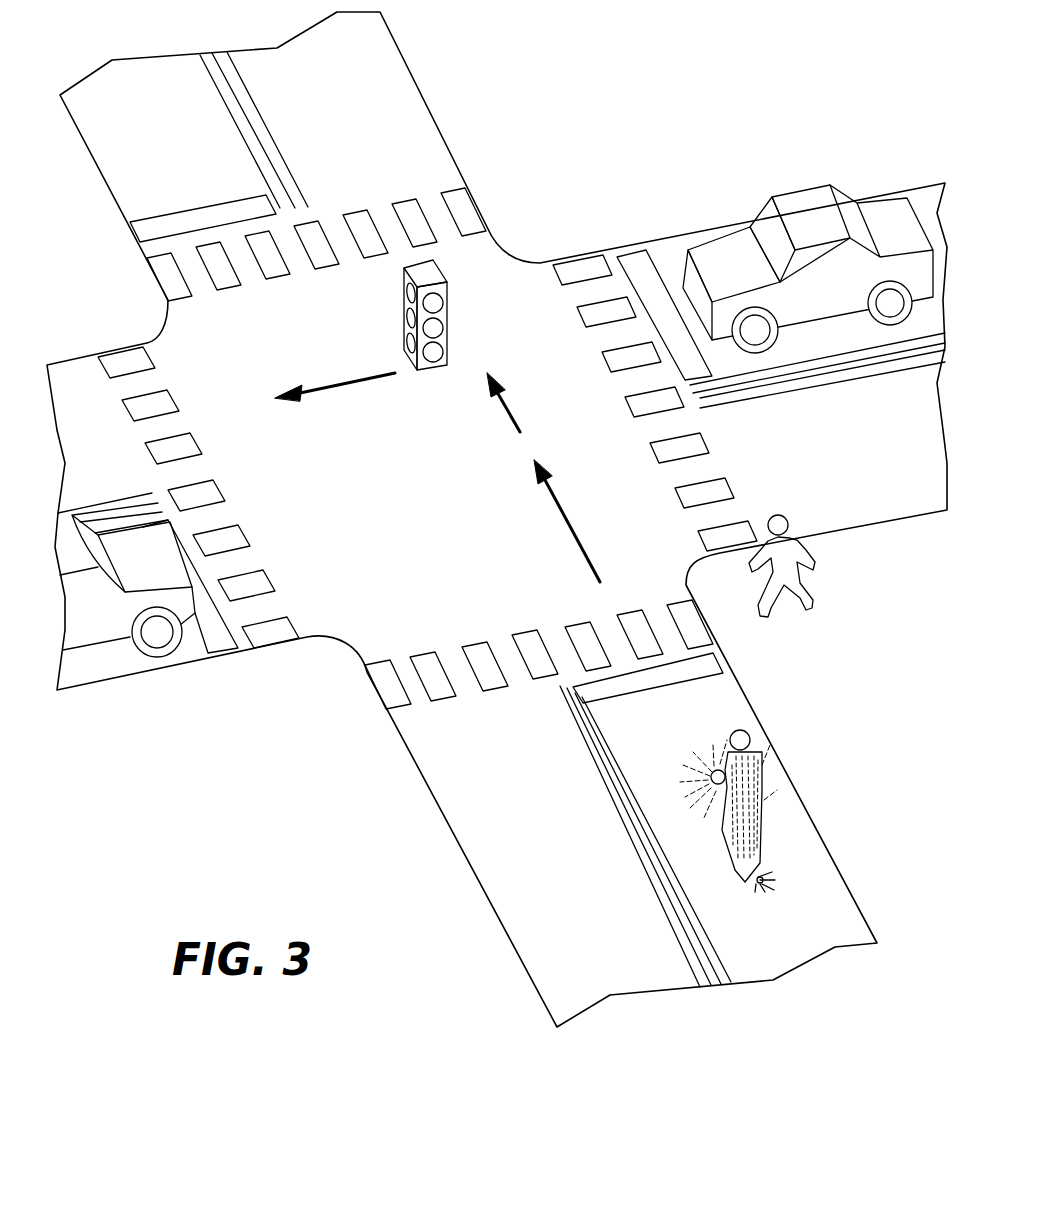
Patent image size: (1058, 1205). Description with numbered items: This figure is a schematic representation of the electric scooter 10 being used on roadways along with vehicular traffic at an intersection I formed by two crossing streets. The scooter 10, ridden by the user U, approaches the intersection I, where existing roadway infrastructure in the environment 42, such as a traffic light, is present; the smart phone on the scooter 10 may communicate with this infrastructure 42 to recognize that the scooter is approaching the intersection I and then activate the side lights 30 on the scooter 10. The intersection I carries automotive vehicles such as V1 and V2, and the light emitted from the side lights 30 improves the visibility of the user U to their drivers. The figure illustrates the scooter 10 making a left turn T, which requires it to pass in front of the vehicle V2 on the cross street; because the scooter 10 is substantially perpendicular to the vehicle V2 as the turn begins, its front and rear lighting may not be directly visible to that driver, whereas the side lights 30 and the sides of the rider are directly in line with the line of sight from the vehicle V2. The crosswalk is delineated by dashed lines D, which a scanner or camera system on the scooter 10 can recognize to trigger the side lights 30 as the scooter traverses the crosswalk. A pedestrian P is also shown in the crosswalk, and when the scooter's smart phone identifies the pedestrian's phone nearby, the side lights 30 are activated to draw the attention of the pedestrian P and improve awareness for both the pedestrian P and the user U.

The electric scooter 10 is at (775, 772).
The side lights 30 is at (733, 850).
The roadway infrastructure in the environment 42 is at (447, 313).
The vehicle V1 is at (807, 210).
The vehicle V2 is at (95, 617).
The pedestrian P is at (805, 580).
The left turn T is at (437, 477).
The intersection I is at (366, 618).
The dashed lines D is at (393, 697).
The user U is at (738, 730).